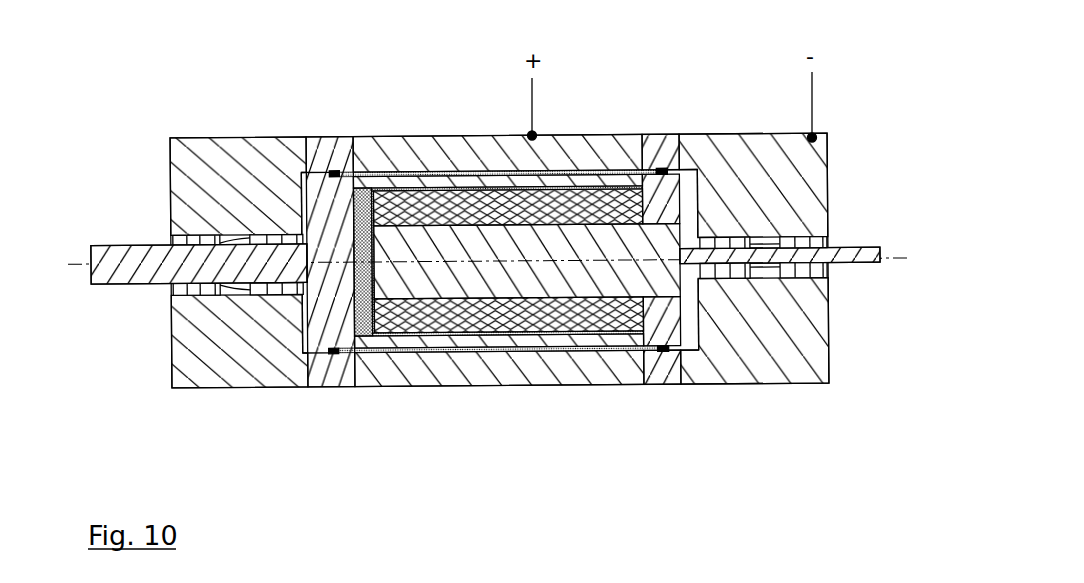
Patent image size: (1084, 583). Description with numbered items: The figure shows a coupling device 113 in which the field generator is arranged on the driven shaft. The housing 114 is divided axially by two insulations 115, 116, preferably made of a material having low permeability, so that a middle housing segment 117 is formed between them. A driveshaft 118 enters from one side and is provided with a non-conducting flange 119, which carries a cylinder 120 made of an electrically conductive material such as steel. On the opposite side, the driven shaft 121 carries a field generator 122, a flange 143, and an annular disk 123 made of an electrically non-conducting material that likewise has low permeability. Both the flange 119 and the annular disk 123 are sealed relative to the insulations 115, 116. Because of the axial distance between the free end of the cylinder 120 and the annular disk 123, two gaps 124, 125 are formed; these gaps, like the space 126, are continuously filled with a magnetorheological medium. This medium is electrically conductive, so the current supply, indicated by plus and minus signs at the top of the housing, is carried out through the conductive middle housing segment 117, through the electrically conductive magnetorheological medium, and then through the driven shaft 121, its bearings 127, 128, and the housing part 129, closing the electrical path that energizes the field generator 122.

The device 113 is at (213, 113).
The housing 114 is at (718, 126).
The insulation 115 is at (338, 140).
The insulation 116 is at (657, 148).
The middle housing segment 117 is at (578, 148).
The driveshaft 118 is at (135, 253).
The non-conducting flange 119 is at (327, 327).
The cylinder 120 is at (549, 337).
The driven shaft 121 is at (865, 258).
The field generator 122 is at (418, 190).
The annular disk 123 is at (670, 202).
The gap 124 is at (500, 350).
The gap 125 is at (612, 338).
The space 126 is at (355, 268).
The bearing 127 is at (740, 273).
The bearing 128 is at (813, 272).
The housing part 129 is at (810, 368).
The flange 143 is at (376, 293).